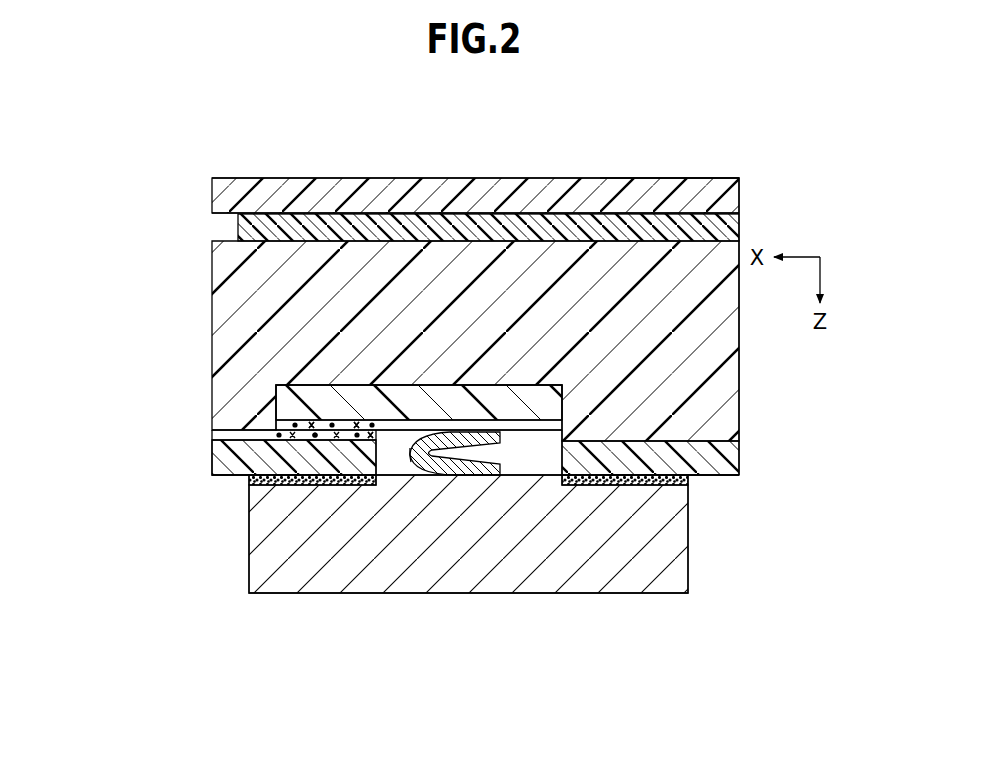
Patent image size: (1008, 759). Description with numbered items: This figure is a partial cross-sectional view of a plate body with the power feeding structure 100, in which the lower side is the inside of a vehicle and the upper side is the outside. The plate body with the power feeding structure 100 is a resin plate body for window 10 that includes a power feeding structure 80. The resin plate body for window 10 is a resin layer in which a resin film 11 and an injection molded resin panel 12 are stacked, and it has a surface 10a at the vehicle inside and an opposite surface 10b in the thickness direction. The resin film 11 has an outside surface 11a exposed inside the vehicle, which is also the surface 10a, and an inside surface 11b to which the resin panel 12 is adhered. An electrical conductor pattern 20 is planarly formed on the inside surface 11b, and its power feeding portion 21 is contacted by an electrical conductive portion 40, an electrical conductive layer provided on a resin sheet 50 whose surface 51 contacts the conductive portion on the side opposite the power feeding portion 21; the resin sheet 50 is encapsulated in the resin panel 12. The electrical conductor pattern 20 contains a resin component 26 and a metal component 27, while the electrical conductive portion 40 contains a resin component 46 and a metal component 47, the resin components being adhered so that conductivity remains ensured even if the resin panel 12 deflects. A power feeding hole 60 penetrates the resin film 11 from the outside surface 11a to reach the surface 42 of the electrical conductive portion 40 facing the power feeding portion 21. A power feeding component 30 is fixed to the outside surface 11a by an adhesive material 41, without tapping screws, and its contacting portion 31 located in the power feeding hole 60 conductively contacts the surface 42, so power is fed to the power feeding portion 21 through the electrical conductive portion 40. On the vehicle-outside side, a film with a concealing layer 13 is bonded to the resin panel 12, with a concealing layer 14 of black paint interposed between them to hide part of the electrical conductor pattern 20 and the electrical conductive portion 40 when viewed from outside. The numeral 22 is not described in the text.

The plate body with the power feeding structure 100 is at (262, 133).
The resin plate body for window 10 is at (124, 183).
The surface of the resin plate body for window 10a is at (740, 478).
The surface of the resin plate body for window 10b is at (740, 178).
The resin film 11 is at (237, 460).
The outside surface 11a is at (232, 477).
The inside surface 11b is at (272, 436).
The resin panel 12 is at (232, 315).
The film with a concealing layer 13 is at (228, 191).
The concealing layer 14 is at (240, 227).
The electrical conductor pattern 20 is at (247, 523).
The power feeding portion 21 is at (286, 437).
The second conductive layer 22 is at (278, 430).
The resin component 26 is at (318, 437).
The metal component 27 is at (368, 437).
The power feeding component 30 is at (268, 540).
The contacting portion 31 is at (418, 470).
The electrical conductive portion 40 is at (276, 412).
The adhesive material 41 is at (258, 483).
The surface of the electrical conductive portion 42 is at (528, 431).
The resin component 46 is at (330, 425).
The metal component 47 is at (360, 425).
The resin sheet 50 is at (276, 394).
The surface 51 is at (278, 421).
The power feeding hole 60 is at (483, 454).
The power feeding structure 80 is at (183, 505).